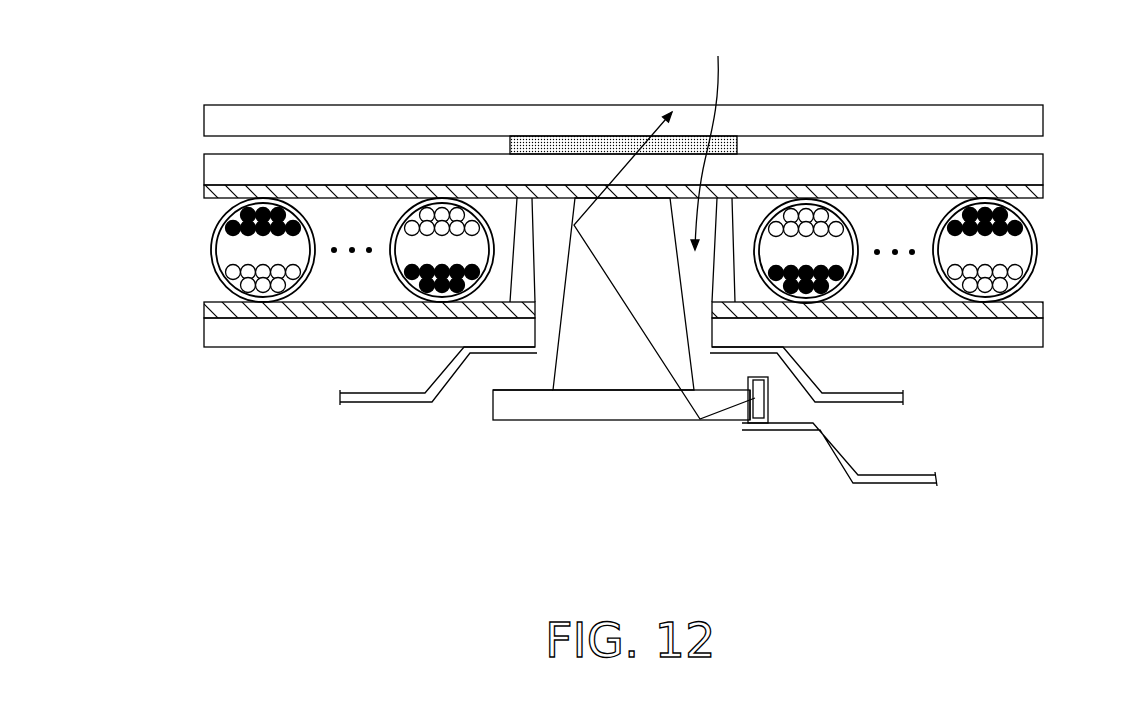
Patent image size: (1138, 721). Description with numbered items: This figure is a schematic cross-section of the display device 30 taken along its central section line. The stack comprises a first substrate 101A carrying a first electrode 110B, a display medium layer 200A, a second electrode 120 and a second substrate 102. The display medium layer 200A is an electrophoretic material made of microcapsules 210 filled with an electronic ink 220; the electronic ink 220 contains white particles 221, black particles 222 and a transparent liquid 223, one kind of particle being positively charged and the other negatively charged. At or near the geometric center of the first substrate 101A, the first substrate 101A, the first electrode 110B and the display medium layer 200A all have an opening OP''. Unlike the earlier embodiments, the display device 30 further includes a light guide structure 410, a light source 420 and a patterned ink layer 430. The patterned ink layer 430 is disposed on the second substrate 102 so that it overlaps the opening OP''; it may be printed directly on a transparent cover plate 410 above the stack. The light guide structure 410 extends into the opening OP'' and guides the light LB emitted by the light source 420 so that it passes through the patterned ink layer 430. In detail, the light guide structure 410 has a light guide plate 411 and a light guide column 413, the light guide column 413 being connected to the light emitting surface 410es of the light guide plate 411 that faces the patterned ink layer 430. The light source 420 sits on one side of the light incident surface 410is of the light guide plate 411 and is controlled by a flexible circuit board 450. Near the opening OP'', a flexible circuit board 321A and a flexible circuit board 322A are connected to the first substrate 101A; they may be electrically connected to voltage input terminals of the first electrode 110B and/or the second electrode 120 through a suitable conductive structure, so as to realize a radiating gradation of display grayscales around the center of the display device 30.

The display device 30 is at (1116, 587).
The light guide structure 410 is at (662, 319).
The light guide plate 411 is at (640, 502).
The light guide column 413 is at (600, 372).
The light emitting surface 410es is at (511, 387).
The light incident surface 410is is at (757, 399).
The patterned ink layer 430 is at (553, 144).
The light LB is at (652, 125).
The opening OP'' is at (720, 136).
The second substrate 102 is at (1035, 172).
The second electrode 120 is at (1035, 193).
The display medium layer 200A is at (597, 248).
The microcapsule 210 is at (218, 213).
The electronic ink 220 is at (546, 256).
The white particles 221 is at (236, 284).
The black particles 222 is at (217, 226).
The transparent liquid 223 is at (226, 250).
The first electrode 110B is at (1035, 312).
The first substrate 101A is at (1035, 332).
The flexible circuit board 322A is at (385, 403).
The flexible circuit board 321A is at (888, 404).
The light source 420 is at (756, 428).
The flexible circuit board 450 is at (884, 484).